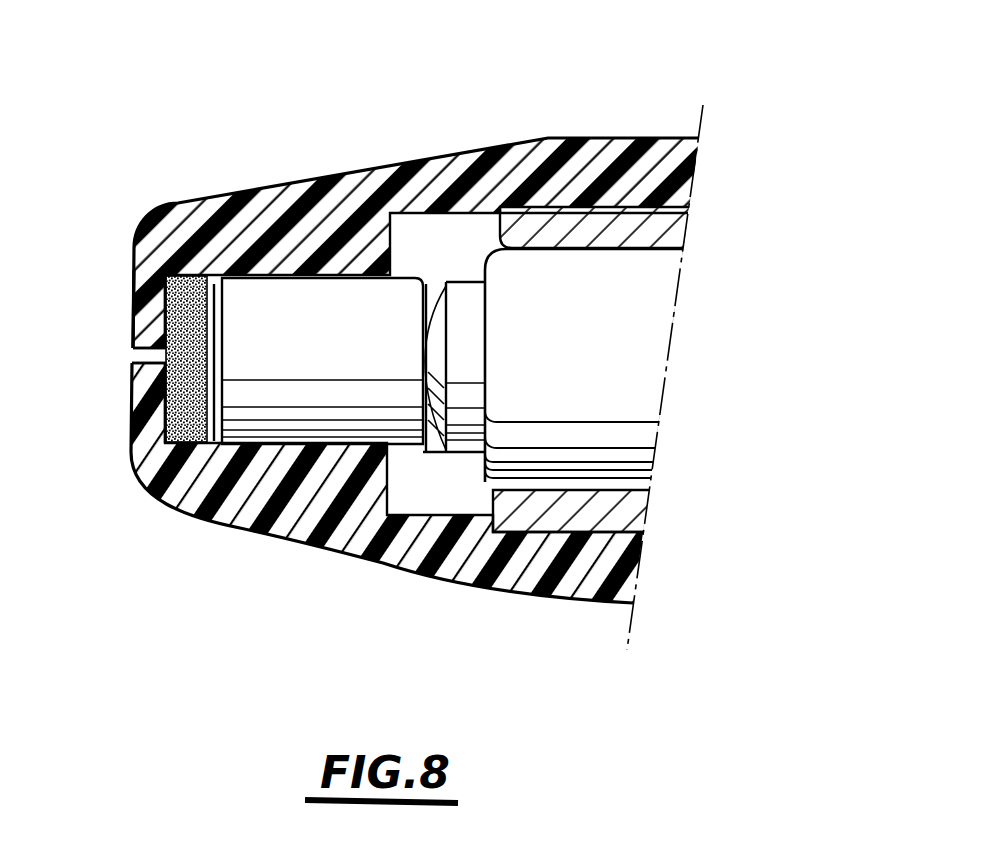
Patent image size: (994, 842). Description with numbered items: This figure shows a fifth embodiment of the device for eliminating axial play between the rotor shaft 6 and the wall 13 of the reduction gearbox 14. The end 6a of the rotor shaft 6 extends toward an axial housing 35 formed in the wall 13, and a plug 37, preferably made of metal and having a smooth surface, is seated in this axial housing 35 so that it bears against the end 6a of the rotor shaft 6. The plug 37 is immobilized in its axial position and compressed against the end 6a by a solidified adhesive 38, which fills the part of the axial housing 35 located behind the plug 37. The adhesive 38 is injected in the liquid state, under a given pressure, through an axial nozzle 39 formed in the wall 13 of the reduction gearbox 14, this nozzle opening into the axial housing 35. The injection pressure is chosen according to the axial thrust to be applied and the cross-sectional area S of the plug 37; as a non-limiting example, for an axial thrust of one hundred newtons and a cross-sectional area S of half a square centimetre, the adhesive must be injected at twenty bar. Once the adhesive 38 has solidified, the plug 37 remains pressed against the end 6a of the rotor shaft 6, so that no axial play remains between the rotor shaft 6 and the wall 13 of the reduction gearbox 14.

The wall 13 is at (356, 168).
The reduction gearbox 14 is at (657, 137).
The axial housing 35 is at (133, 303).
The cross-sectional area of the plug S is at (133, 321).
The axial nozzle 39 is at (133, 360).
The solidified adhesive 38 is at (165, 440).
The plug 37 is at (317, 390).
The end of the rotor shaft 6a is at (456, 454).
The rotor shaft 6 is at (590, 373).